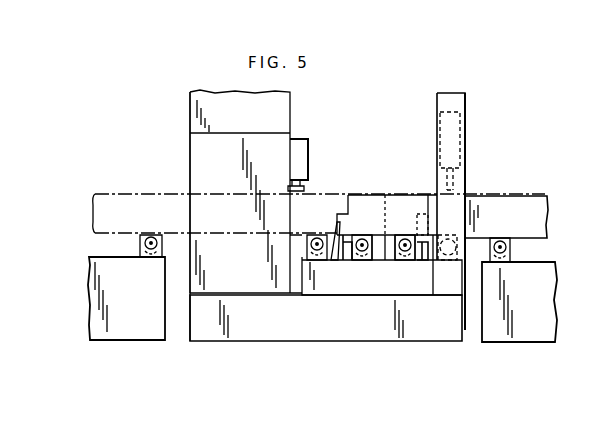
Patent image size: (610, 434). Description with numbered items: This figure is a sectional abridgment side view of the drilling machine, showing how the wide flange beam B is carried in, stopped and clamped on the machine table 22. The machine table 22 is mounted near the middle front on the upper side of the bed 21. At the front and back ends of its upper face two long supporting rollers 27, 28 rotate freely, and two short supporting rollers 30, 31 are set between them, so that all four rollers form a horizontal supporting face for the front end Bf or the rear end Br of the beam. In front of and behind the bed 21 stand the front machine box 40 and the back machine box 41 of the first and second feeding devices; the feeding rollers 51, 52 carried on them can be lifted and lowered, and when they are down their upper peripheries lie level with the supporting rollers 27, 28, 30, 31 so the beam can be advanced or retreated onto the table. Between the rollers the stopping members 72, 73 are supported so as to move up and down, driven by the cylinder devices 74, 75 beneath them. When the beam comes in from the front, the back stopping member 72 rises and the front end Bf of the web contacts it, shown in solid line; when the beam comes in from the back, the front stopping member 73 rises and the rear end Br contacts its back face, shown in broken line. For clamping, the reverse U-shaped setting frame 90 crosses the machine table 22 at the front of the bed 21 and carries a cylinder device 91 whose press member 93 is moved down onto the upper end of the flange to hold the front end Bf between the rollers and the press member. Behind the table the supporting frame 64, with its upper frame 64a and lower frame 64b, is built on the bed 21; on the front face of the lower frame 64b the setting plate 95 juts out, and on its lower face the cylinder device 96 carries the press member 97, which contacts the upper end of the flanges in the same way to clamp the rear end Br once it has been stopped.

The wide flange beam B is at (126, 194).
The front end of wide flange beam Bf is at (348, 197).
The rear end of wide flange beam Br is at (428, 200).
The bed 21 is at (312, 341).
The machine table 22 is at (308, 292).
The long supporting roller 27 is at (448, 261).
The long supporting roller 28 is at (317, 237).
The short supporting roller 30 is at (403, 260).
The short supporting roller 31 is at (363, 260).
The front machine box 40 is at (500, 342).
The back machine box 41 is at (148, 340).
The feeding roller 51 is at (500, 238).
The feeding roller 52 is at (158, 233).
The supporting frame 64 is at (296, 112).
The upper frame 64a is at (190, 124).
The lower frame 64b is at (190, 153).
The stopping member 72 is at (346, 221).
The stopping member 73 is at (426, 216).
The cylinder device 74 is at (344, 260).
The cylinder device 75 is at (422, 260).
The setting frame 90 is at (437, 97).
The cylinder device 91 is at (465, 132).
The press member 93 is at (453, 190).
The setting plate 95 is at (305, 139).
The cylinder device 96 is at (308, 163).
The press member 97 is at (304, 187).